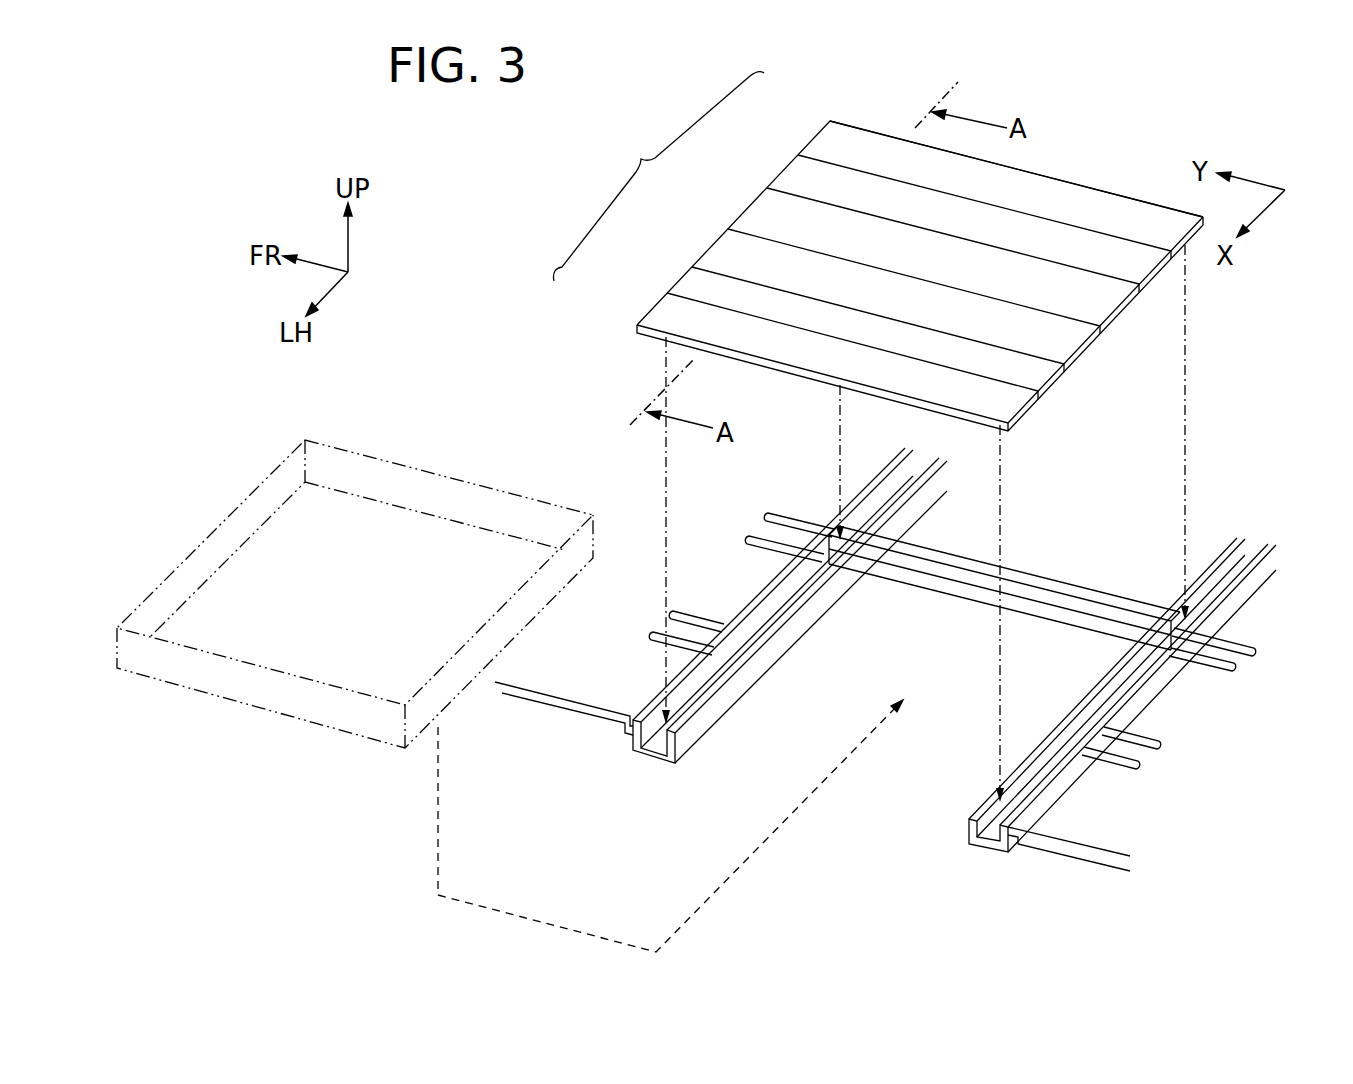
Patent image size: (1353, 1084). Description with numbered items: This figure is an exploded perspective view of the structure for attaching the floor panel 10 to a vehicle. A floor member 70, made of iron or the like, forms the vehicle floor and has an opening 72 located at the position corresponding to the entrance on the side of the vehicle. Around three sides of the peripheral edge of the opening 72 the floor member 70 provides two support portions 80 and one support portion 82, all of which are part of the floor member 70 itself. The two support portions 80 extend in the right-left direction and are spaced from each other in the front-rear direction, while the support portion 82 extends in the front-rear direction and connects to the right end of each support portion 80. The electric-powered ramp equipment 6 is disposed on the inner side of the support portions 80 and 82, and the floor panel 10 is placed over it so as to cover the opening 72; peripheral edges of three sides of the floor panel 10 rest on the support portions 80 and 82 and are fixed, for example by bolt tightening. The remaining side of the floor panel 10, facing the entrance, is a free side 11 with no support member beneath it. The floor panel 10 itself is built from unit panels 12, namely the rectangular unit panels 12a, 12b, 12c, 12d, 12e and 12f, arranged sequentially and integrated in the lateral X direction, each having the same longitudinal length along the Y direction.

The electric-powered ramp equipment 6 is at (367, 608).
The floor panel 10 is at (878, 262).
The free side 11 is at (803, 372).
The unit panels 12 is at (878, 231).
The unit panel 12a is at (672, 310).
The unit panel 12b is at (702, 278).
The unit panel 12c is at (734, 244).
The unit panel 12d is at (764, 212).
The unit panel 12e is at (793, 182).
The unit panel 12f is at (824, 148).
The floor member 70 is at (643, 597).
The opening 72 is at (890, 671).
The support portion 80 is at (720, 689).
The support portion 82 is at (965, 582).